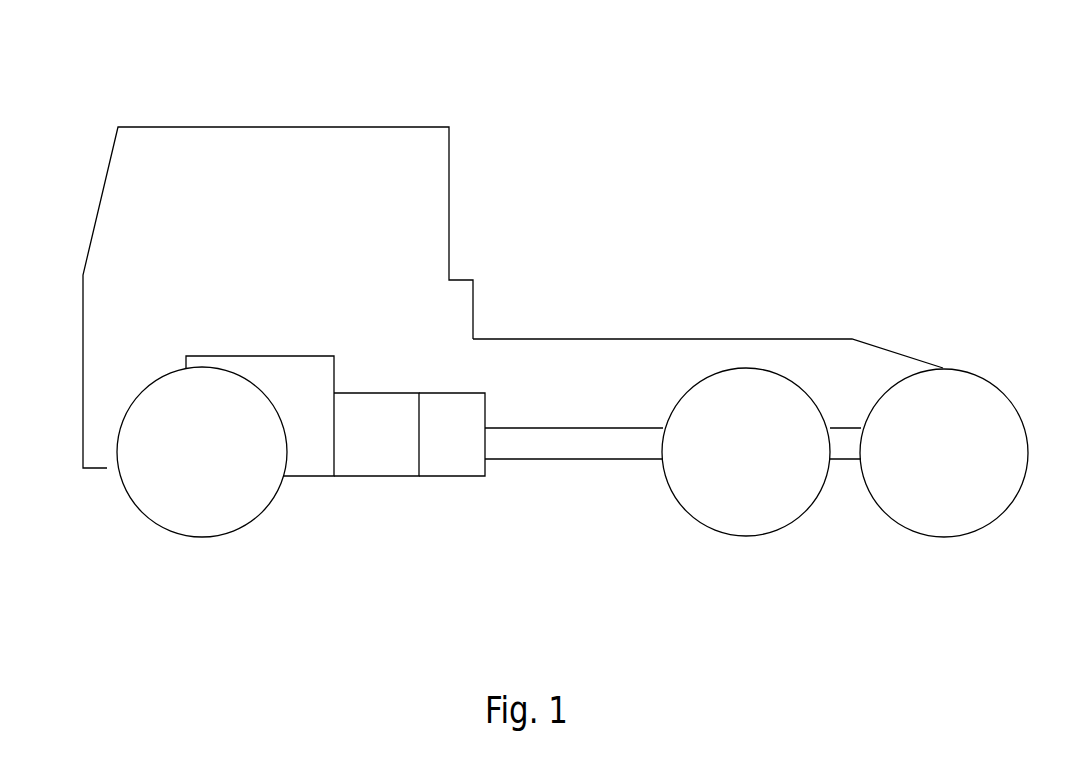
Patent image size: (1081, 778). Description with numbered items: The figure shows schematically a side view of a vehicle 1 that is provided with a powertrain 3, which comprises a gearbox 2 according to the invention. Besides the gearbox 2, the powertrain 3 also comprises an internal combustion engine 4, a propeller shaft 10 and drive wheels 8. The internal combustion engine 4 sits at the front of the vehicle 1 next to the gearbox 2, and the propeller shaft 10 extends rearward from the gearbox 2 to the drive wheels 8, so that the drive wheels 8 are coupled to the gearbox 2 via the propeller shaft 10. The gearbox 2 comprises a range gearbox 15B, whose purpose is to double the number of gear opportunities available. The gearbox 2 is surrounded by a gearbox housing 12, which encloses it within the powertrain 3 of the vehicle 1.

The vehicle 1 is at (568, 96).
The gearbox 2 is at (512, 433).
The powertrain 3 is at (533, 351).
The internal combustion engine 4 is at (225, 357).
The drive wheels 8 is at (793, 523).
The propeller shaft 10 is at (573, 459).
The gearbox housing 12 is at (431, 393).
The range gearbox 15B is at (453, 477).